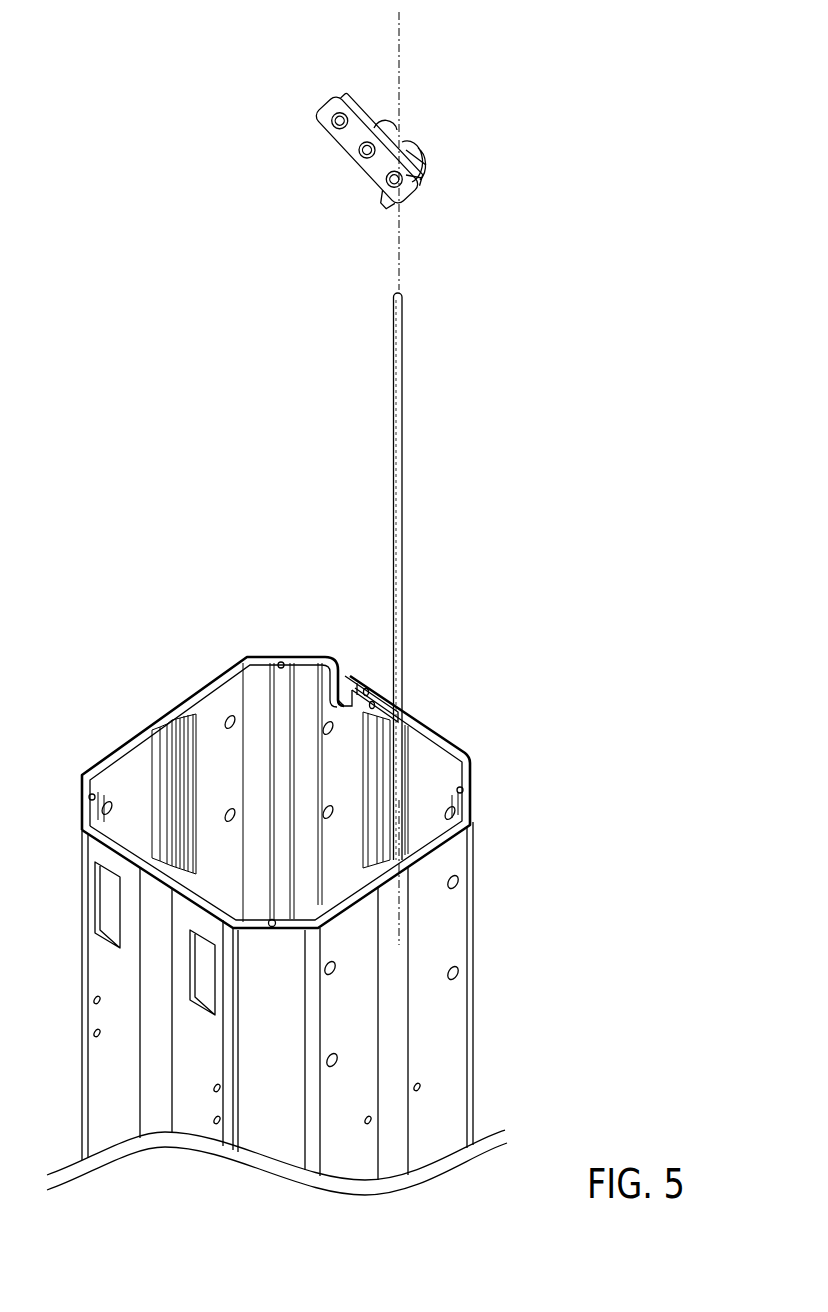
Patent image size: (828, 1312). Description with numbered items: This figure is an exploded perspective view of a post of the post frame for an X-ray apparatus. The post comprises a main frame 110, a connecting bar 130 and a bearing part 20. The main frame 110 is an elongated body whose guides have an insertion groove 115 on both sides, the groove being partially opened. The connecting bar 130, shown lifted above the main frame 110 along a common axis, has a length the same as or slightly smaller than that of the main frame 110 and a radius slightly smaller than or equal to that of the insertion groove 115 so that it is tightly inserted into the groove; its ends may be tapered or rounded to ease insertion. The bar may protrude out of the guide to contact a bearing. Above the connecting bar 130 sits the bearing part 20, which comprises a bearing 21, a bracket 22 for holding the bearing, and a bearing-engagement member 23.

The bearing part 20 is at (287, 120).
The bearing 21 is at (416, 150).
The bracket 22 is at (325, 125).
The bearing-engagement member 23 is at (389, 128).
The main frame 110 is at (508, 972).
The insertion groove 115 is at (372, 703).
The connecting bar 130 is at (400, 482).